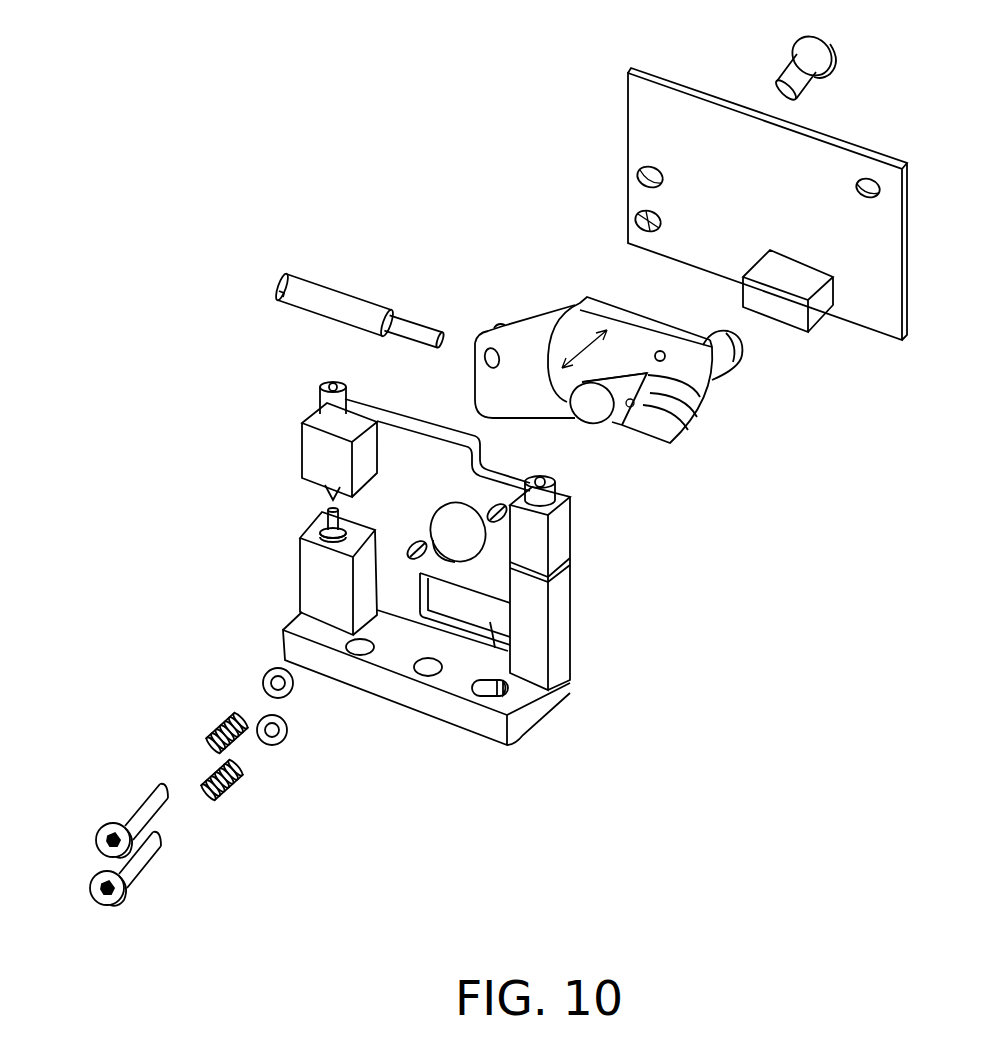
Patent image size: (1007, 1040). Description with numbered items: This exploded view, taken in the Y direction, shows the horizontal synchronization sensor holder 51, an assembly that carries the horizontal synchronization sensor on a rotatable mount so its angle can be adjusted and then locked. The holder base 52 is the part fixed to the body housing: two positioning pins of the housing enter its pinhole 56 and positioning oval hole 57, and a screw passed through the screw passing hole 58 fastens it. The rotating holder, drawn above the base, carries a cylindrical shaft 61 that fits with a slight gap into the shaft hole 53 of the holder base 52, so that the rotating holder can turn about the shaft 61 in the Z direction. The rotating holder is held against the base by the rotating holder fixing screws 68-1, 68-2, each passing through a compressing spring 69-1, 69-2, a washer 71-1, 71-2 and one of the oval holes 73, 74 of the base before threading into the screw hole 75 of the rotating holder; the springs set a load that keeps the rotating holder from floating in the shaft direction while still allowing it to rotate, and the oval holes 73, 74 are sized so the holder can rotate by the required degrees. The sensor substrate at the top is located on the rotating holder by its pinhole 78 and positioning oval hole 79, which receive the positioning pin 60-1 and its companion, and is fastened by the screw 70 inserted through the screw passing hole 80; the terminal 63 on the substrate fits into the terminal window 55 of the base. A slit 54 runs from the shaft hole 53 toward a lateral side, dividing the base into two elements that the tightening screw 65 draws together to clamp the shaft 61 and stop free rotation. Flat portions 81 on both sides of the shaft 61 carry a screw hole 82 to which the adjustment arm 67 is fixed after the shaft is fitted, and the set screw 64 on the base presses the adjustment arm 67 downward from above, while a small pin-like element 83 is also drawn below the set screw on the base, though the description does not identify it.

The horizontal synchronization sensor holder 51 is at (678, 775).
The holder base 52 is at (407, 468).
The shaft hole 53 is at (465, 550).
The slit 54 is at (566, 567).
The terminal window 55 is at (571, 683).
The pinhole 56 is at (363, 652).
The positioning oval hole 57 is at (490, 693).
The screw passing hole 58 is at (427, 672).
The positioning pin 60-1 is at (654, 390).
The cylindrical shaft 61 is at (650, 378).
The terminal 63 is at (822, 317).
The set screw 64 is at (320, 400).
The tightening screw 65 is at (550, 492).
The adjustment arm 67 is at (372, 315).
The rotating holder fixing screw 68-1 is at (140, 875).
The rotating holder fixing screw 68-2 is at (137, 807).
The compressing spring 69-1 is at (238, 783).
The compressing spring 69-2 is at (218, 722).
The screw 70 is at (836, 58).
The washer 71-1 is at (287, 737).
The washer 71-2 is at (263, 681).
The oval hole 73 is at (556, 522).
The oval hole 74 is at (416, 558).
The screw hole 75 is at (660, 351).
The pinhole 78 is at (880, 188).
The positioning oval hole 79 is at (636, 218).
The screw passing hole 80 is at (637, 172).
The flat portion 81 is at (646, 393).
The screw hole 82 is at (677, 437).
The pin 83 is at (317, 521).